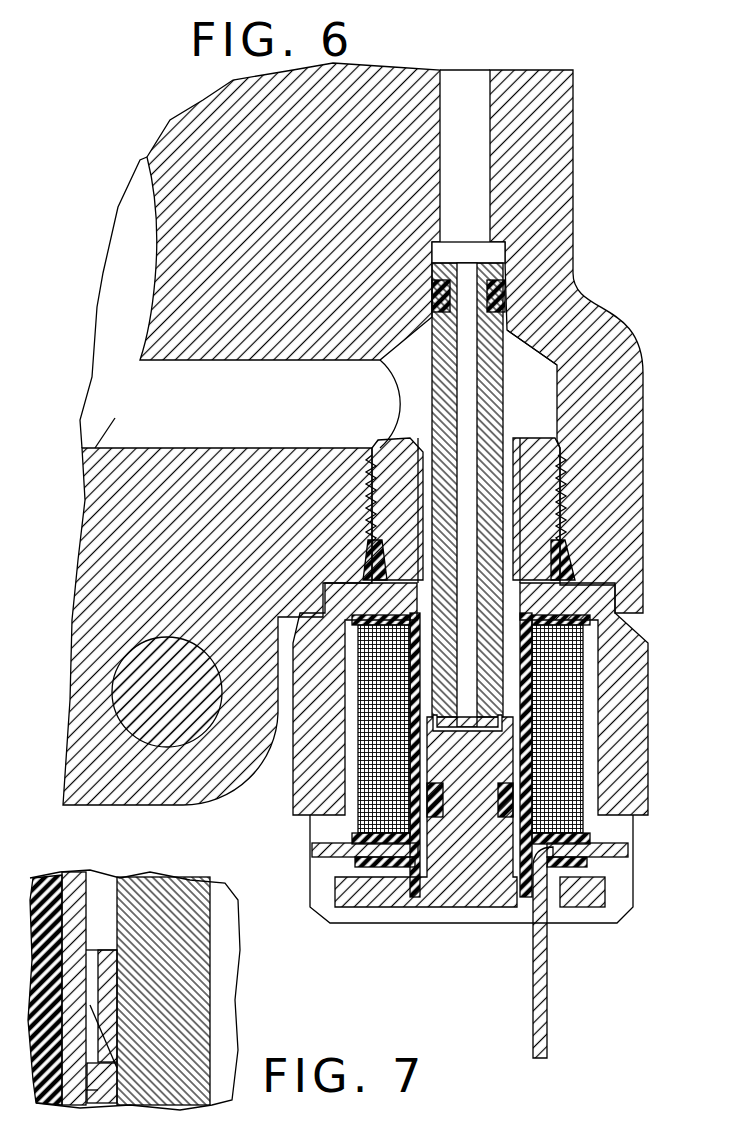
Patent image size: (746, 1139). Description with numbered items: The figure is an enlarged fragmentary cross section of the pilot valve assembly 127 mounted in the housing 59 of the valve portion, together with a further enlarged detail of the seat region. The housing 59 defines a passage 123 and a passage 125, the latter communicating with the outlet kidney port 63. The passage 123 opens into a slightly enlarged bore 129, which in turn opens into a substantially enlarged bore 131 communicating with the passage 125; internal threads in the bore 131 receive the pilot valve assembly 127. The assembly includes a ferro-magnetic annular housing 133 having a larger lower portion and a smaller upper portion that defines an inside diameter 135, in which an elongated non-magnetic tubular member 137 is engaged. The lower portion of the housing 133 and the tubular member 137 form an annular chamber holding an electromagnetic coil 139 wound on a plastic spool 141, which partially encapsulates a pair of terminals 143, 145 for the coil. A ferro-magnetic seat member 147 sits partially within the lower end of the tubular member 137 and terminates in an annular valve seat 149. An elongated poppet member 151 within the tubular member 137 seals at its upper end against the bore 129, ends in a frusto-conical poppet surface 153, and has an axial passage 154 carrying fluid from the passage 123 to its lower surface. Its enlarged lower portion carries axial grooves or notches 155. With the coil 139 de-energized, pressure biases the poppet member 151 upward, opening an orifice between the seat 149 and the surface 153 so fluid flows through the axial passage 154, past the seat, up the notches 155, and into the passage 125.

In FIG. 6, the housing 59 is at (525, 132).
In FIG. 6, the outlet kidney port 63 is at (158, 280).
In FIG. 6, the passage 123 is at (447, 132).
In FIG. 6, the passage 125 is at (240, 368).
In FIG. 6, the pilot valve assembly 127 is at (472, 952).
In FIG. 6, the enlarged bore 129 is at (498, 246).
In FIG. 6, the enlarged bore 131 is at (556, 414).
In FIG. 6, the annular housing 133 is at (620, 732).
In FIG. 6, the inside diameter 135 is at (426, 498).
In FIG. 6, the tubular member 137 is at (515, 512).
In FIG. 7, the tubular member 137 is at (72, 882).
In FIG. 6, the electromagnetic coil 139 is at (560, 686).
In FIG. 6, the plastic spool 141 is at (528, 778).
In FIG. 7, the plastic spool 141 is at (47, 886).
In FIG. 6, the terminal 143 is at (548, 962).
In FIG. 6, the terminal 145 is at (322, 848).
In FIG. 6, the seat member 147 is at (443, 882).
In FIG. 7, the seat member 147 is at (120, 1080).
In FIG. 7, the annular valve seat 149 is at (120, 1062).
In FIG. 6, the poppet member 151 is at (487, 393).
In FIG. 7, the poppet member 151 is at (145, 888).
In FIG. 7, the frusto-conical poppet surface 153 is at (125, 1092).
In FIG. 6, the axial passage 154 is at (467, 402).
In FIG. 7, the axial grooves or notches 155 is at (93, 972).